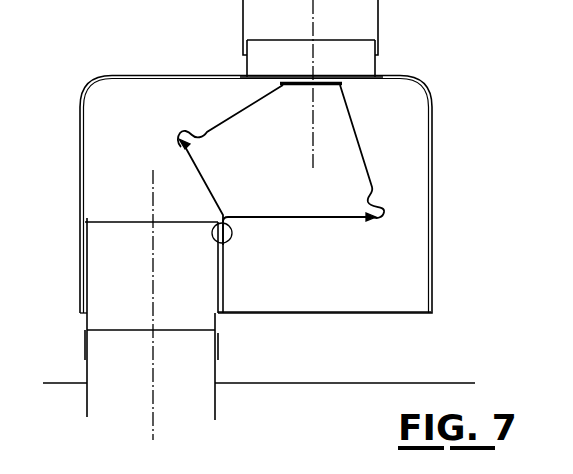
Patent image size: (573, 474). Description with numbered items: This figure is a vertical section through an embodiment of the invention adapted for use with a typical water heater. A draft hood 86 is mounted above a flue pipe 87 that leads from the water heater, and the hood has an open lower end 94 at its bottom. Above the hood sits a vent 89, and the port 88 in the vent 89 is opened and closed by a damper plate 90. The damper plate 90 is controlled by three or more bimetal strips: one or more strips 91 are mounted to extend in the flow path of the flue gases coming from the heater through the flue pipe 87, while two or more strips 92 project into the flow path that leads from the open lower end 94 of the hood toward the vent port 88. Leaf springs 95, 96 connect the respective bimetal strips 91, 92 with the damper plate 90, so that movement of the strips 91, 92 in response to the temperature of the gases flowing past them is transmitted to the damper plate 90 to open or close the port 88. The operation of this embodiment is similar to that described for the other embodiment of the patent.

The draft hood 86 is at (432, 128).
The flue pipe 87 is at (216, 372).
The port 88 is at (294, 71).
The vent 89 is at (378, 27).
The damper plate 90 is at (360, 80).
The bimetal strip 91 is at (203, 181).
The bimetal strips 92 is at (340, 217).
The open lower end 94 is at (389, 316).
The leaf spring 95 is at (223, 119).
The leaf spring 96 is at (354, 128).